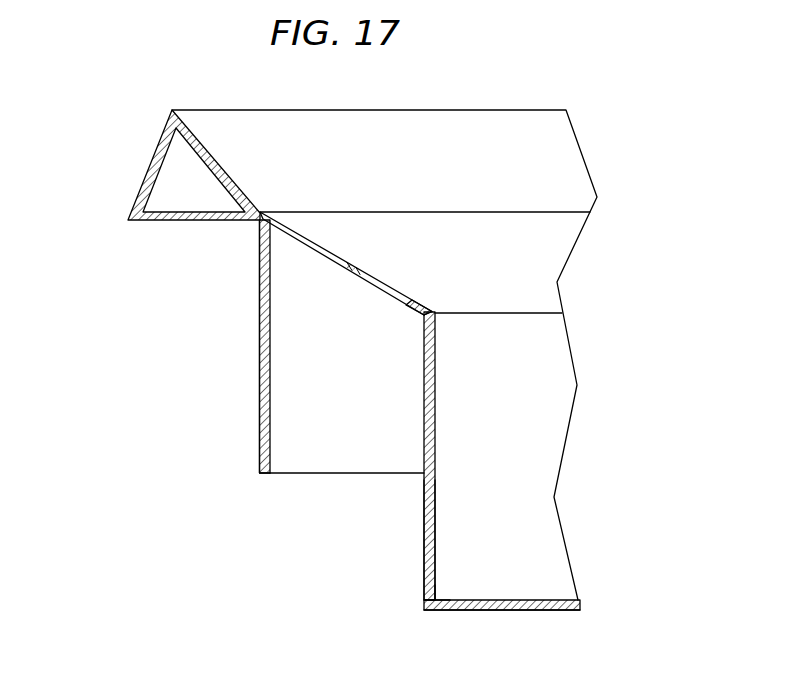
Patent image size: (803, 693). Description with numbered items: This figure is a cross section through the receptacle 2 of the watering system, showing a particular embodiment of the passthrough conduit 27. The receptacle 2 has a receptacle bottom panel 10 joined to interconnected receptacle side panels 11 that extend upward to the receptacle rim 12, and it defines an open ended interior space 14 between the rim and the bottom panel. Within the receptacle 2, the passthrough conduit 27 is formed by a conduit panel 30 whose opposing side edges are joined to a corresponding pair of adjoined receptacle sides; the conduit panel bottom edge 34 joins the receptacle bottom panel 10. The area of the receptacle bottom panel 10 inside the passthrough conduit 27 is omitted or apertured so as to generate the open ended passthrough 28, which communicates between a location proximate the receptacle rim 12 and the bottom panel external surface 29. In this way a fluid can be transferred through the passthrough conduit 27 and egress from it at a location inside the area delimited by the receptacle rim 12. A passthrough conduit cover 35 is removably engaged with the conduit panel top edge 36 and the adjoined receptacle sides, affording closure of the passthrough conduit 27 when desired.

The receptacle 2 is at (524, 85).
The receptacle bottom panel 10 is at (503, 602).
The receptacle side panels 11 is at (435, 503).
The receptacle rim 12 is at (151, 162).
The open ended interior space 14 is at (514, 470).
The passthrough conduit 27 is at (240, 318).
The open ended passthrough 28 is at (297, 400).
The bottom panel external surface 29 is at (445, 610).
The conduit panel 30 is at (435, 374).
The conduit panel bottom edge 34 is at (437, 598).
The passthrough conduit cover 35 is at (353, 268).
The conduit panel top edge 36 is at (433, 312).